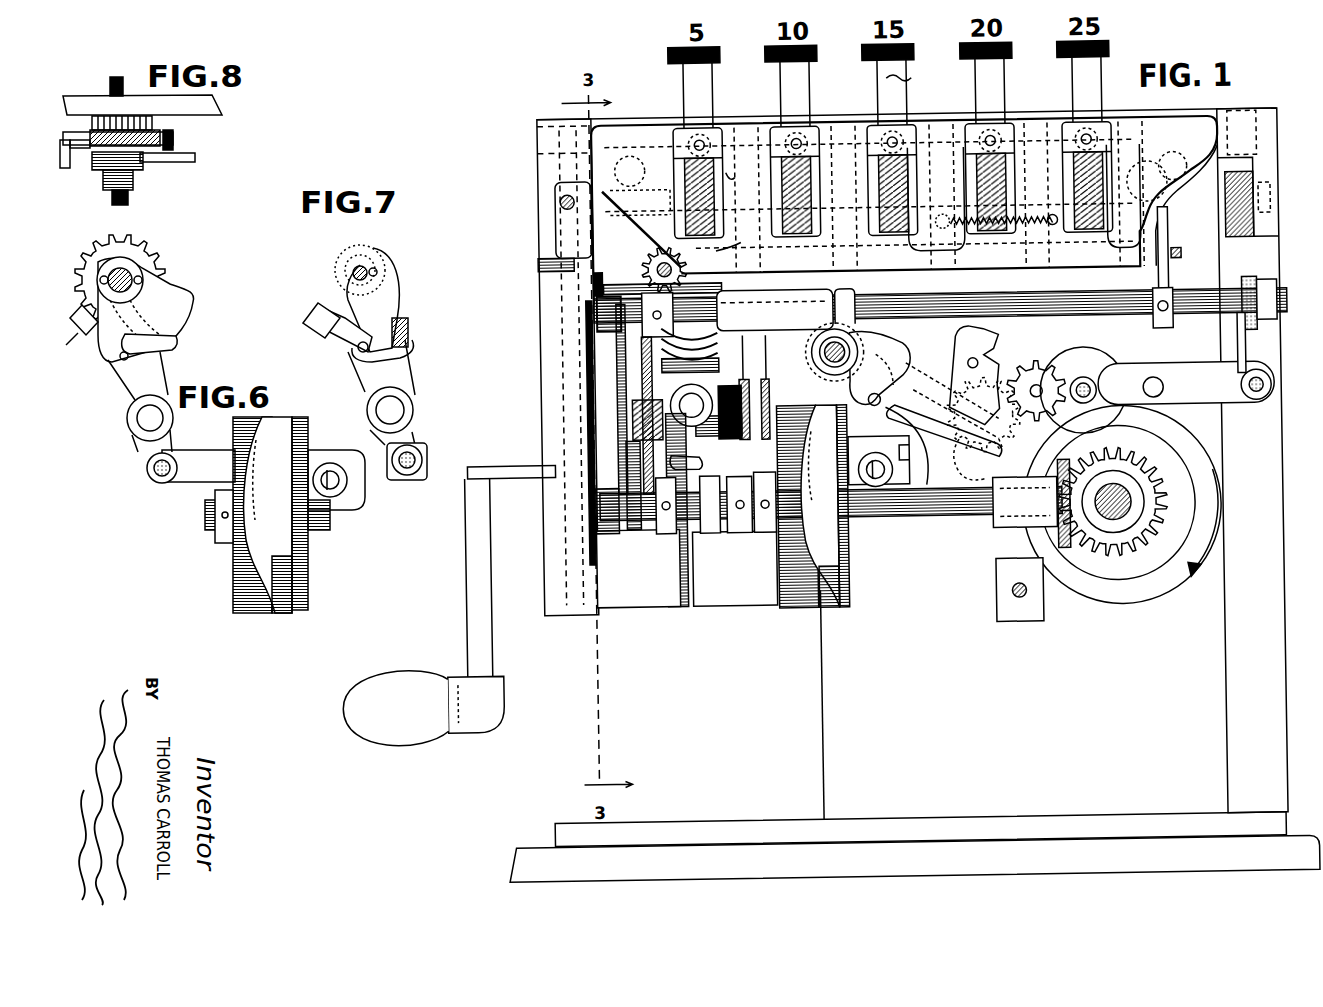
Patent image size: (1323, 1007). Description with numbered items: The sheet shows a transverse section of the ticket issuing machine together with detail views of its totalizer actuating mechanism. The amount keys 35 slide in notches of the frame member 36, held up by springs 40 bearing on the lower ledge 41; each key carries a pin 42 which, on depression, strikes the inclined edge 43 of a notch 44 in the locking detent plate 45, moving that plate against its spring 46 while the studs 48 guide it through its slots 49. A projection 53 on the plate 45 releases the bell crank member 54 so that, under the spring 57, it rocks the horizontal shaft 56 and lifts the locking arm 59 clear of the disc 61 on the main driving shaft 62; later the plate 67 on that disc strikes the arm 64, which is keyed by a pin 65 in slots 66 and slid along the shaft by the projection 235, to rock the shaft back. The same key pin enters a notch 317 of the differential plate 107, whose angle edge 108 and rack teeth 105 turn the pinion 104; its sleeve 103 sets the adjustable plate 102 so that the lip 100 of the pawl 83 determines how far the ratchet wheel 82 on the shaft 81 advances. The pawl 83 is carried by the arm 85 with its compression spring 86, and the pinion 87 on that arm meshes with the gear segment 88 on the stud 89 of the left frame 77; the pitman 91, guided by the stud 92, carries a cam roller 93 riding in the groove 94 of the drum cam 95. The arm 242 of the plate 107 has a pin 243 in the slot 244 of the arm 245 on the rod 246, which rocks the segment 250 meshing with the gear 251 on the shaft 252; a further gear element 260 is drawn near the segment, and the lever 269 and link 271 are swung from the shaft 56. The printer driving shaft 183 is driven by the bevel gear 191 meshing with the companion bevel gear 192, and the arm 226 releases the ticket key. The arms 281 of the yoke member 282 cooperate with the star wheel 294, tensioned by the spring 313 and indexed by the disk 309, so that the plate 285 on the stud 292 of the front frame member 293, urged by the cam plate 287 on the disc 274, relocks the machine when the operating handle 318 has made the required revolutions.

In FIG. 1, the amount keys 35 is at (787, 76).
In FIG. 1, the frame member 36 is at (1150, 125).
In FIG. 1, the springs 40 is at (1050, 226).
In FIG. 1, the lower ledge 41 is at (960, 230).
In FIG. 1, the pin 42 is at (700, 142).
In FIG. 1, the inclined edge 43 is at (695, 152).
In FIG. 1, the notch 44 is at (715, 138).
In FIG. 1, the locking detent plate 45 is at (1135, 175).
In FIG. 1, the spring 46 is at (955, 216).
In FIG. 1, the studs 48 is at (625, 185).
In FIG. 1, the slots 49 is at (668, 185).
In FIG. 1, the projection 53 is at (1150, 232).
In FIG. 1, the bell crank member 54 is at (1178, 300).
In FIG. 1, the horizontal shaft 56 is at (1065, 300).
In FIG. 1, the spring 57 is at (1185, 256).
In FIG. 1, the locking arm 59 is at (812, 140).
In FIG. 1, the disc 61 is at (635, 545).
In FIG. 1, the main driving shaft 62 is at (888, 516).
In FIG. 6, the main driving shaft 62 is at (207, 525).
In FIG. 1, the arm 64 is at (640, 372).
In FIG. 1, the pin 65 is at (560, 318).
In FIG. 1, the slots 66 is at (606, 292).
In FIG. 1, the plate 67 is at (634, 530).
In FIG. 8, the left frame 77 is at (222, 108).
In FIG. 1, the shaft 81 is at (660, 262).
In FIG. 8, the shaft 81 is at (128, 198).
In FIG. 7, the shaft 81 is at (368, 273).
In FIG. 6, the shaft 81 is at (135, 278).
In FIG. 8, the ratchet wheel 82 is at (175, 145).
In FIG. 6, the ratchet wheel 82 is at (145, 250).
In FIG. 8, the pawl 83 is at (65, 140).
In FIG. 7, the pawl 83 is at (325, 335).
In FIG. 6, the pawl 83 is at (78, 316).
In FIG. 7, the arm 85 is at (398, 305).
In FIG. 7, the compression spring 86 is at (408, 332).
In FIG. 6, the compression spring 86 is at (176, 345).
In FIG. 8, the pinion 87 is at (172, 126).
In FIG. 7, the pinion 87 is at (378, 250).
In FIG. 7, the gear segment 88 is at (383, 375).
In FIG. 6, the gear segment 88 is at (150, 378).
In FIG. 1, the stud 89 is at (692, 400).
In FIG. 7, the stud 89 is at (392, 410).
In FIG. 6, the stud 89 is at (150, 418).
In FIG. 1, the pitman 91 is at (878, 445).
In FIG. 7, the pitman 91 is at (427, 460).
In FIG. 6, the pitman 91 is at (185, 482).
In FIG. 1, the guide stud 92 is at (878, 465).
In FIG. 6, the guide stud 92 is at (340, 482).
In FIG. 6, the cam roller 93 is at (300, 520).
In FIG. 1, the groove 94 is at (843, 606).
In FIG. 6, the groove 94 is at (288, 605).
In FIG. 1, the drum cam 95 is at (800, 606).
In FIG. 6, the drum cam 95 is at (307, 580).
In FIG. 8, the formed lip 100 is at (65, 168).
In FIG. 7, the formed lip 100 is at (310, 318).
In FIG. 6, the formed lip 100 is at (72, 332).
In FIG. 8, the adjustable plate 102 is at (192, 162).
In FIG. 6, the adjustable plate 102 is at (180, 290).
In FIG. 8, the sleeve 103 is at (133, 176).
In FIG. 6, the sleeve 103 is at (110, 278).
In FIG. 1, the pinion 104 is at (680, 283).
In FIG. 1, the rack teeth 105 is at (722, 250).
In FIG. 1, the differential plate 107 is at (937, 150).
In FIG. 1, the angle edge 108 is at (735, 168).
In FIG. 1, the printer driving shaft 183 is at (1160, 490).
In FIG. 1, the bevel gear 191 is at (1135, 585).
In FIG. 1, the companion bevel gear 192 is at (1060, 570).
In FIG. 1, the arm 226 is at (1246, 282).
In FIG. 1, the projection 235 is at (597, 248).
In FIG. 1, the arm 242 is at (820, 295).
In FIG. 1, the pin 243 is at (850, 300).
In FIG. 1, the slot 244 is at (862, 295).
In FIG. 1, the arm 245 is at (905, 357).
In FIG. 1, the rod 246 is at (828, 360).
In FIG. 1, the segment 250 is at (1012, 365).
In FIG. 1, the gear 251 is at (1090, 365).
In FIG. 1, the shaft 252 is at (990, 432).
In FIG. 1, the gear 260 is at (975, 455).
In FIG. 1, the lever 269 is at (1210, 408).
In FIG. 1, the link 271 is at (1234, 355).
In FIG. 1, the disc 274 is at (692, 580).
In FIG. 1, the arms 281 is at (905, 345).
In FIG. 1, the yoke member 282 is at (826, 280).
In FIG. 1, the plate 285 is at (640, 350).
In FIG. 1, the cam plate 287 is at (704, 460).
In FIG. 1, the stud 292 is at (640, 425).
In FIG. 1, the front frame member 293 is at (630, 408).
In FIG. 1, the star wheel 294 is at (775, 310).
In FIG. 1, the disk 309 is at (742, 530).
In FIG. 1, the spring 313 is at (755, 375).
In FIG. 1, the notch 317 is at (1115, 185).
In FIG. 1, the operating handle 318 is at (466, 602).